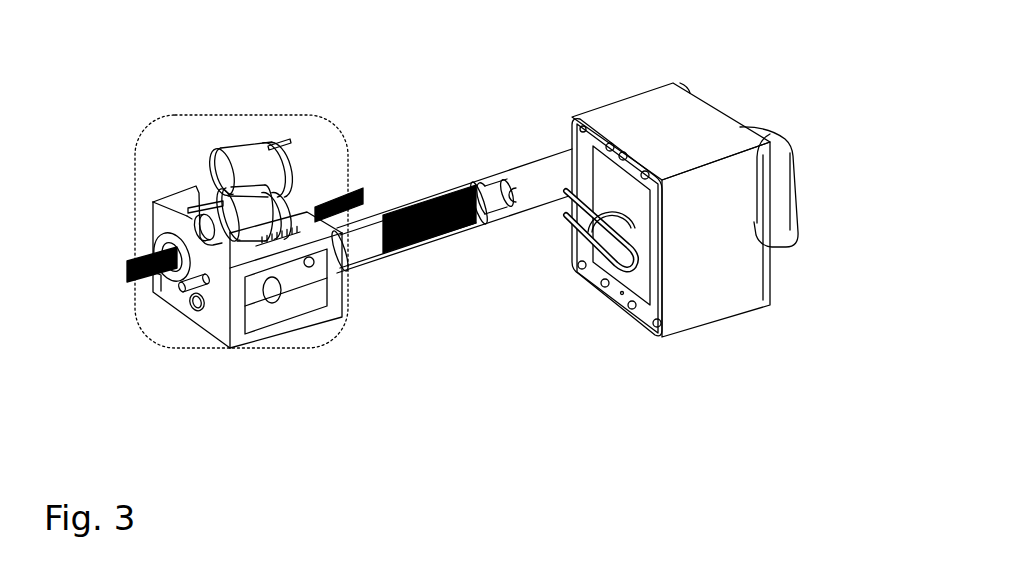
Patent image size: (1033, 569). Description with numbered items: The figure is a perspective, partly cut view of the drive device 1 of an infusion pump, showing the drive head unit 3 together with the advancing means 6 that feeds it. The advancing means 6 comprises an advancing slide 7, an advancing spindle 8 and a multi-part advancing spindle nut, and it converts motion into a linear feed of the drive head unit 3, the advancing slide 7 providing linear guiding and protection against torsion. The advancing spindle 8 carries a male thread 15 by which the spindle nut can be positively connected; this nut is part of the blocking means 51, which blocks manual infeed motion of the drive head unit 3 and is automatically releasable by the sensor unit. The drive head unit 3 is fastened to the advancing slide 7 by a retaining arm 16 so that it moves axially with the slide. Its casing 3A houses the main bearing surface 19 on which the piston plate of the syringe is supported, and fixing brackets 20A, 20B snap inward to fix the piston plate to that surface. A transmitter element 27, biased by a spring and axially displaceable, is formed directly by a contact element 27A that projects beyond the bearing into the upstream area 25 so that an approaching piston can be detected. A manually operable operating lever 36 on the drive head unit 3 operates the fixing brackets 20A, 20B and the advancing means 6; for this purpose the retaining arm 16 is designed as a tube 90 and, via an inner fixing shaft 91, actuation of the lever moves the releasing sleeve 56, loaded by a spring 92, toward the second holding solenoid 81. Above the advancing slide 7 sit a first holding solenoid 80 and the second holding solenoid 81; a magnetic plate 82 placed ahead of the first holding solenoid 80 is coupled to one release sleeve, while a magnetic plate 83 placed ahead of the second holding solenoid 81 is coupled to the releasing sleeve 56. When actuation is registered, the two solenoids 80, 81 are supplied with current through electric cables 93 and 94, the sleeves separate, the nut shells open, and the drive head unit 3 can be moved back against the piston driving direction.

The drive device 1 is at (205, 433).
The drive head unit 3 is at (748, 69).
The drive head unit casing 3A is at (653, 107).
The advancing means 6 is at (229, 97).
The advancing slide 7 is at (167, 225).
The advancing spindle 8 is at (127, 268).
The male thread 15 is at (153, 300).
The retaining arm 16 is at (405, 205).
The main bearing surface 19 is at (612, 178).
The fixing bracket 20A is at (667, 262).
The fixing bracket 20B is at (664, 296).
The upstream area 25 is at (482, 317).
The transmitter element 27 is at (572, 232).
The contact element 27A is at (605, 212).
The operating lever 36 is at (783, 140).
The blocking means 51 is at (181, 160).
The releasing sleeve 56 is at (267, 290).
The first holding solenoid 80 is at (267, 158).
The second holding solenoid 81 is at (240, 350).
The magnetic plate 82 is at (222, 162).
The magnetic plate 83 is at (279, 195).
The tube 90 is at (505, 169).
The inner fixing shaft 91 is at (488, 197).
The spring 92 is at (423, 237).
The electric cable 93 is at (291, 141).
The electric cable 94 is at (197, 212).